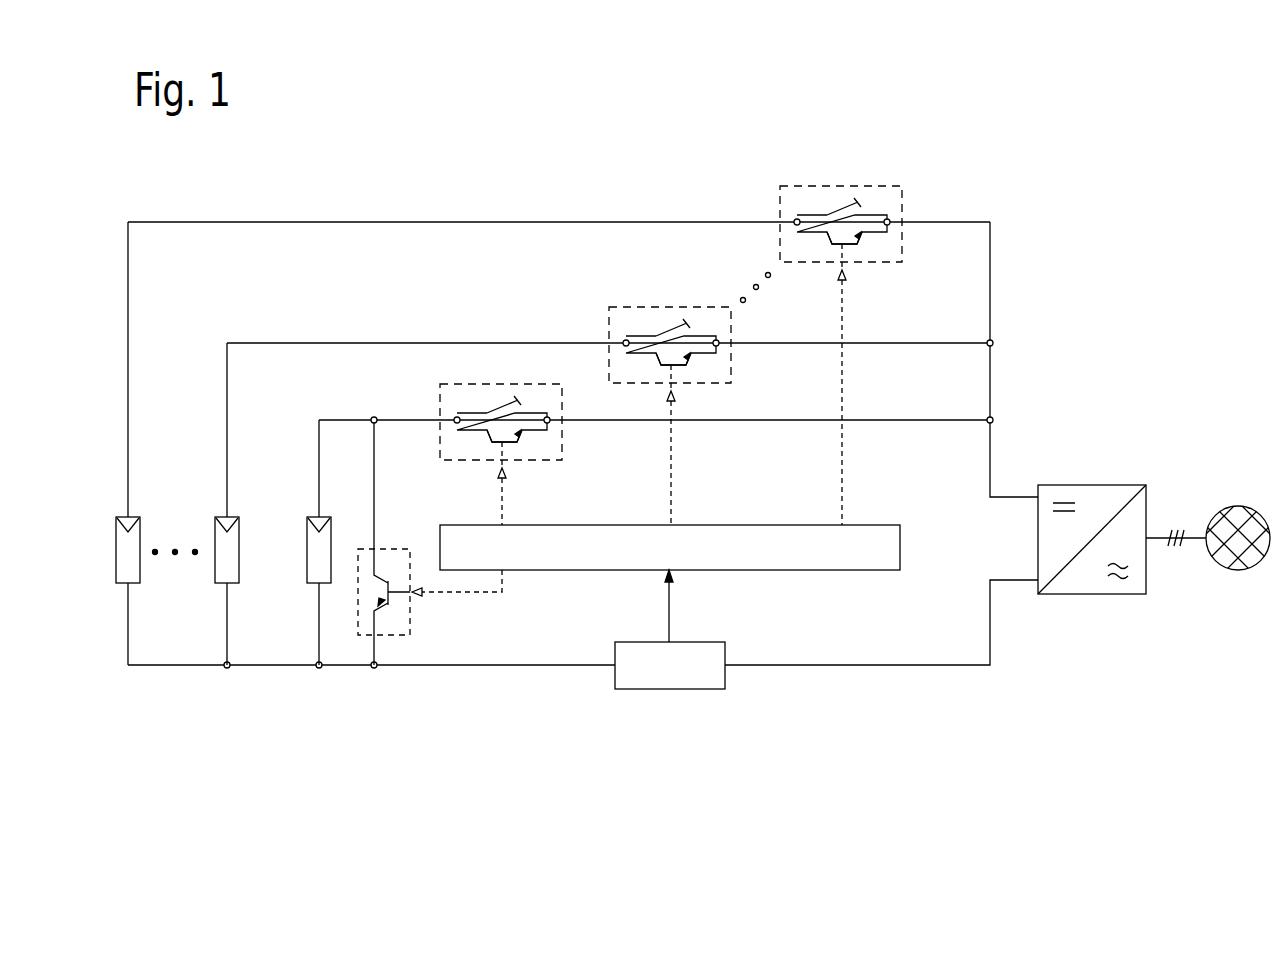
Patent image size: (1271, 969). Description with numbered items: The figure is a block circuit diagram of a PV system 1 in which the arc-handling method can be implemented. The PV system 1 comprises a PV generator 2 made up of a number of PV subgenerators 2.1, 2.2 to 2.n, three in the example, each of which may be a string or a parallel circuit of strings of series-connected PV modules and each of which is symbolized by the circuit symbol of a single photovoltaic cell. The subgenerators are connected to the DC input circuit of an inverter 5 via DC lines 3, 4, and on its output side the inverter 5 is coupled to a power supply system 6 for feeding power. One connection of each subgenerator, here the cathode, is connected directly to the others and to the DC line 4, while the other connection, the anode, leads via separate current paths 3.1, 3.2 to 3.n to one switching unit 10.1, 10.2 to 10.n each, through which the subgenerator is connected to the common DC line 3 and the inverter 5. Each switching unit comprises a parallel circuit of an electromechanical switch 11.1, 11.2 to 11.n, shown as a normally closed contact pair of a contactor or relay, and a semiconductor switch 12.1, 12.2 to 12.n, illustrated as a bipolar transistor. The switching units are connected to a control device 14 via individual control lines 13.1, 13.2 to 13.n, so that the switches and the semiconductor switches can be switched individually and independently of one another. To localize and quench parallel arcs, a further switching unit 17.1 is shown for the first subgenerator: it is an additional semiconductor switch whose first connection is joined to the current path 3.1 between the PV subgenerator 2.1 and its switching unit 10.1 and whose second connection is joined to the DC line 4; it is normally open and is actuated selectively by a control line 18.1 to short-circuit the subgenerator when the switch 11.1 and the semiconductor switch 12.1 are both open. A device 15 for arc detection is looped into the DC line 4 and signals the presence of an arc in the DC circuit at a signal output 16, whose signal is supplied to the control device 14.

The PV system 1 is at (1015, 215).
The PV generator 2 is at (207, 443).
The PV subgenerator 2.1 is at (307, 565).
The PV subgenerator 2.2 is at (215, 565).
The PV subgenerator 2.n is at (117, 566).
The DC line 3 is at (992, 385).
The current path 3.1 is at (356, 420).
The current path 3.2 is at (276, 343).
The current path 3.n is at (243, 222).
The DC line 4 is at (1040, 647).
The inverter 5 is at (1086, 483).
The power supply system 6 is at (1228, 508).
The switching unit 10.1 is at (509, 387).
The switching unit 10.2 is at (710, 327).
The switching unit 10.n is at (875, 214).
The electromechanical switch 11.1 is at (493, 405).
The electromechanical switch 11.2 is at (667, 330).
The electromechanical switch 11.n is at (843, 203).
The semiconductor switch 12.1 is at (517, 438).
The semiconductor switch 12.2 is at (680, 362).
The semiconductor switch 12.n is at (852, 238).
The control line 13.1 is at (503, 500).
The control line 13.2 is at (672, 478).
The control line 13.n is at (843, 478).
The control device 14 is at (815, 570).
The device for arc detection 15 is at (725, 683).
The signal output 16 is at (672, 606).
The further switching unit 17.1 is at (411, 604).
The control line 18.1 is at (485, 593).